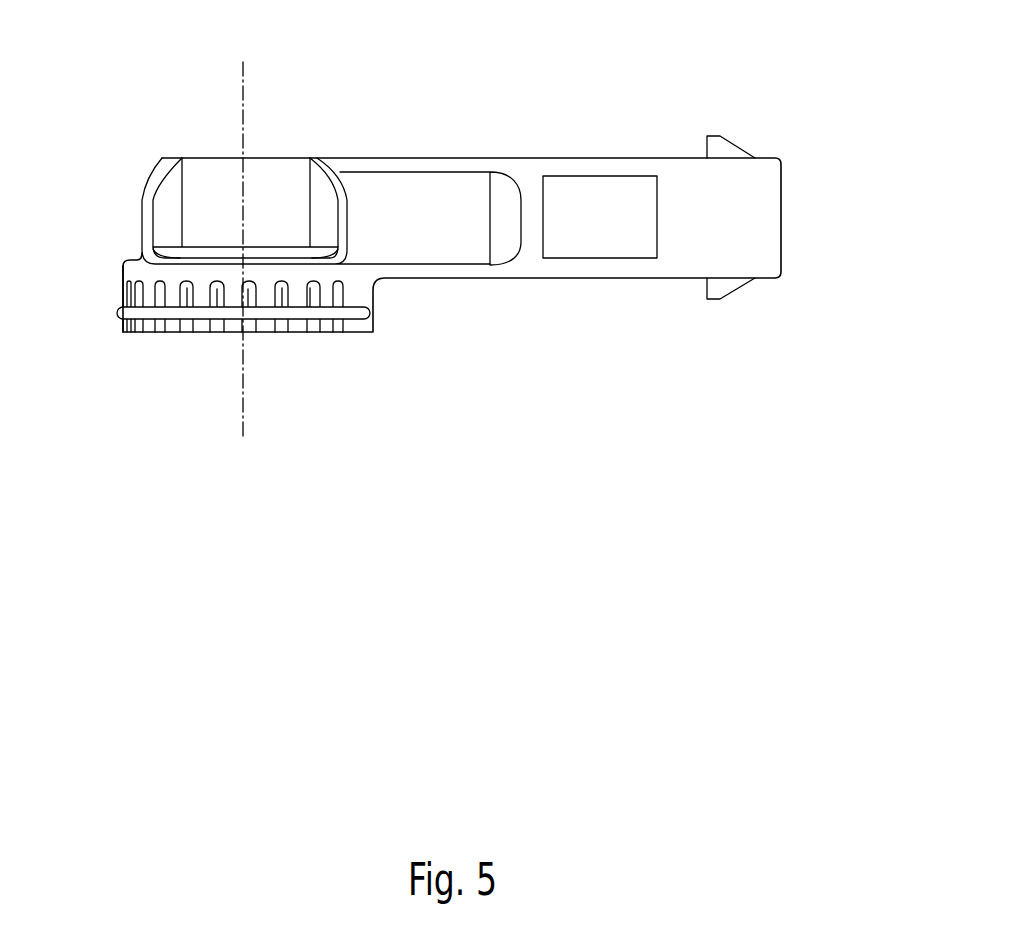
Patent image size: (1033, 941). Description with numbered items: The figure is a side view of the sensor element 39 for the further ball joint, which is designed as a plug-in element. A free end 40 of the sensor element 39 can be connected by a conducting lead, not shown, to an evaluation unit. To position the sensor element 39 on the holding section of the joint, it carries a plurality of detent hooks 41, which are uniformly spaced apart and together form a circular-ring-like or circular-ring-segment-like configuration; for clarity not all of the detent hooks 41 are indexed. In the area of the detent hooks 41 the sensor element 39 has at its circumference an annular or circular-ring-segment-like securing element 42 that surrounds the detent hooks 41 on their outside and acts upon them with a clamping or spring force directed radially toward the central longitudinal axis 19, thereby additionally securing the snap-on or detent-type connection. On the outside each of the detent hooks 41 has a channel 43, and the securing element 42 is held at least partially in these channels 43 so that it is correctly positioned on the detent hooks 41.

The central longitudinal axis 19 is at (243, 78).
The sensor element 39 is at (364, 74).
The free end 40 is at (800, 138).
The detent hooks 41 is at (234, 302).
The securing element 42 is at (116, 314).
The channel 43 is at (114, 292).